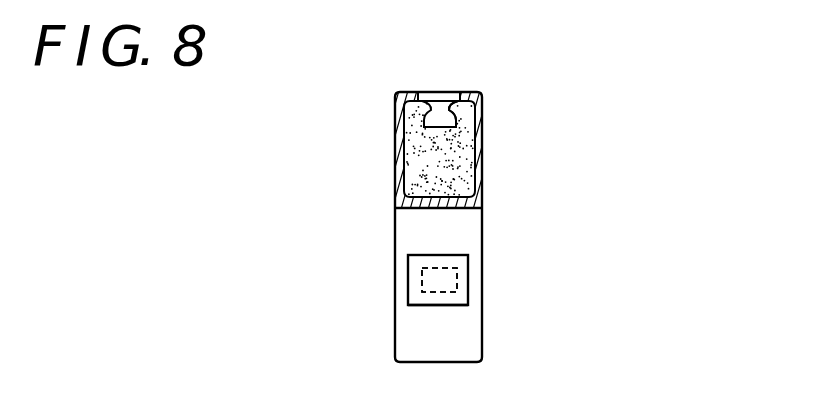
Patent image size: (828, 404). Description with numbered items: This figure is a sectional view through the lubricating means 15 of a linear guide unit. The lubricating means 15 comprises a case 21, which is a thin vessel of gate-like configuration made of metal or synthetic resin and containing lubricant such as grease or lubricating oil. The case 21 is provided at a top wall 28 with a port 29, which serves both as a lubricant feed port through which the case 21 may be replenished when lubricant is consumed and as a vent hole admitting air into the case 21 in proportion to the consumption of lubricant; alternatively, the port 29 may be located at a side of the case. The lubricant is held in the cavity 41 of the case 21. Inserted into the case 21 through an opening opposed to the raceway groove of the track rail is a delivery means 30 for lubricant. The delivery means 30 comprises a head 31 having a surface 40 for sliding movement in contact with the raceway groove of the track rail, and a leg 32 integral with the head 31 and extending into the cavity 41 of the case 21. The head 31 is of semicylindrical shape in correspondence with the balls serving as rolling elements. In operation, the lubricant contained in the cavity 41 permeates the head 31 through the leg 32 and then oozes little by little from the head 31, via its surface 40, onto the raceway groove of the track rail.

The lubricating means 15 is at (492, 145).
The case 21 is at (398, 122).
The top wall 28 is at (463, 100).
The port 29 is at (434, 98).
The delivery means 30 is at (470, 265).
The head 31 is at (460, 289).
The leg 32 is at (422, 280).
The surface 40 is at (449, 298).
The cavity 41 is at (448, 172).